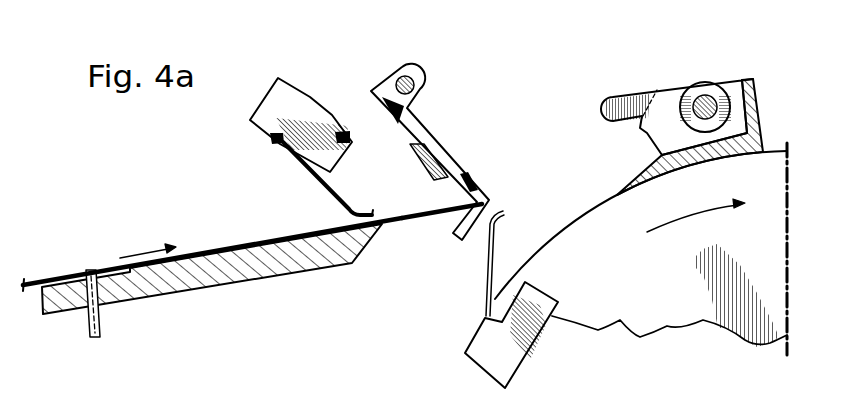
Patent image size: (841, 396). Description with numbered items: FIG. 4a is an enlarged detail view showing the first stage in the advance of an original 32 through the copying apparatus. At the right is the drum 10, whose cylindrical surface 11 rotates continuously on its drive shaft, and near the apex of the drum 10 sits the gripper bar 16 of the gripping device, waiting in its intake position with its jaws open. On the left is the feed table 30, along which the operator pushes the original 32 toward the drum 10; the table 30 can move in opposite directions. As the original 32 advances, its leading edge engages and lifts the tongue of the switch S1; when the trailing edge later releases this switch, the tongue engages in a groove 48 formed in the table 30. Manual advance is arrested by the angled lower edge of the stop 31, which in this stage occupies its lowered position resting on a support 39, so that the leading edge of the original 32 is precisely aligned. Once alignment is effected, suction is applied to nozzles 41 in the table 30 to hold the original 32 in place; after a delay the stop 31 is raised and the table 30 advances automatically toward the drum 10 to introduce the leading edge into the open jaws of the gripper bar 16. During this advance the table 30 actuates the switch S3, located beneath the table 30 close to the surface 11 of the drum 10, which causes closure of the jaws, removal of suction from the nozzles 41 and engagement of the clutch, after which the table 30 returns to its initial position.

The drum 10 is at (668, 328).
The cylindrical surface 11 is at (552, 240).
The gripper bar 16 is at (607, 100).
The feed table 30 is at (252, 277).
The stop 31 is at (495, 207).
The original 32 is at (407, 216).
The support 39 is at (414, 150).
The nozzles 41 is at (100, 329).
The groove 48 is at (228, 252).
The switch S1 is at (315, 109).
The switch S3 is at (547, 302).